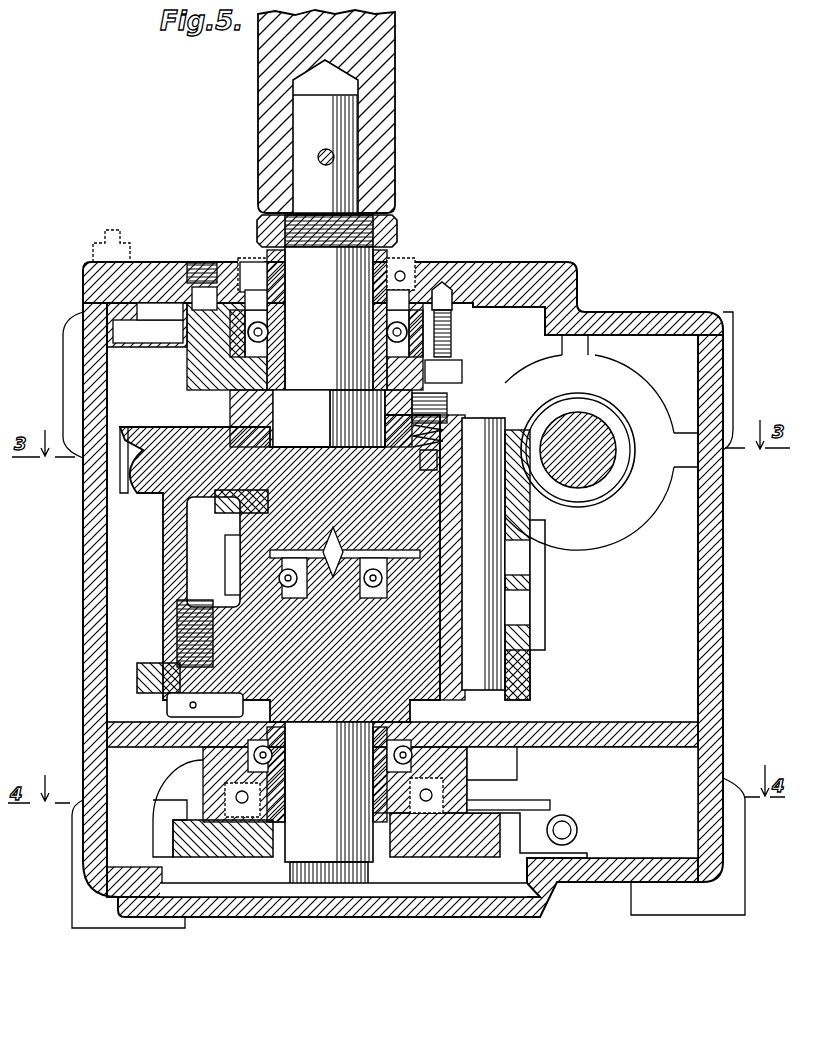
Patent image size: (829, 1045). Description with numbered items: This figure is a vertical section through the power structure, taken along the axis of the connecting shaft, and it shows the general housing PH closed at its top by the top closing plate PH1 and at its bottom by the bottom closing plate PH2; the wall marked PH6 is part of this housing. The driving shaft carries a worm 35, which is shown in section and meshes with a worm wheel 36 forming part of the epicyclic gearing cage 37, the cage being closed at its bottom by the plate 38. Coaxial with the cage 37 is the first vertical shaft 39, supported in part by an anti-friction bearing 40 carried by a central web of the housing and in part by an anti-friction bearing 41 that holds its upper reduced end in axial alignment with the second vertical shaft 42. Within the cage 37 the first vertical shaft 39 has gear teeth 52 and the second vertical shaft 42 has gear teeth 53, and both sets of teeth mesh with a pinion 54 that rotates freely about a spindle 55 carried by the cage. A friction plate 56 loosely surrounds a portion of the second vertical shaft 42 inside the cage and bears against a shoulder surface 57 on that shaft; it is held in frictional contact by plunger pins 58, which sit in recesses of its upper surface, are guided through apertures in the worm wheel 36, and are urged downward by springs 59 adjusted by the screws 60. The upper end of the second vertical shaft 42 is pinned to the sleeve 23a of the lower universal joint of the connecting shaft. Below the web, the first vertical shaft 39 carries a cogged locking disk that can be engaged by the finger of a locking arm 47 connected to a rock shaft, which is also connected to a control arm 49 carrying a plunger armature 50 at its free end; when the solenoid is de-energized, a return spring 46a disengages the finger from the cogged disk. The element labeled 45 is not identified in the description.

The sleeve 23a is at (397, 134).
The second vertical shaft 42 is at (365, 262).
The general housing PH is at (416, 576).
The top closing plate PH1 is at (553, 258).
The bottom closing plate PH2 is at (503, 907).
The housing partition wall PH6 is at (637, 703).
The plunger pins 58 is at (442, 448).
The springs 59 is at (440, 400).
The screws 60 is at (440, 414).
The worm 35 is at (600, 430).
The worm wheel 36 is at (157, 463).
The epicyclic gearing cage 37 is at (163, 560).
The plate 38 is at (150, 665).
The friction plate 56 is at (240, 502).
The shoulder surface 57 is at (247, 520).
The anti-friction bearing 41 is at (273, 577).
The gear teeth 53 is at (425, 577).
The gear teeth 52 is at (435, 630).
The pinion 54 is at (540, 636).
The spindle 55 is at (483, 667).
The plunger armature 50 is at (193, 797).
The bearing retainer 45 is at (200, 837).
The return spring 46a is at (580, 827).
The control arm 49 is at (520, 800).
The locking arm 47 is at (537, 827).
The first vertical shaft 39 is at (333, 880).
The anti-friction bearing 40 is at (277, 775).